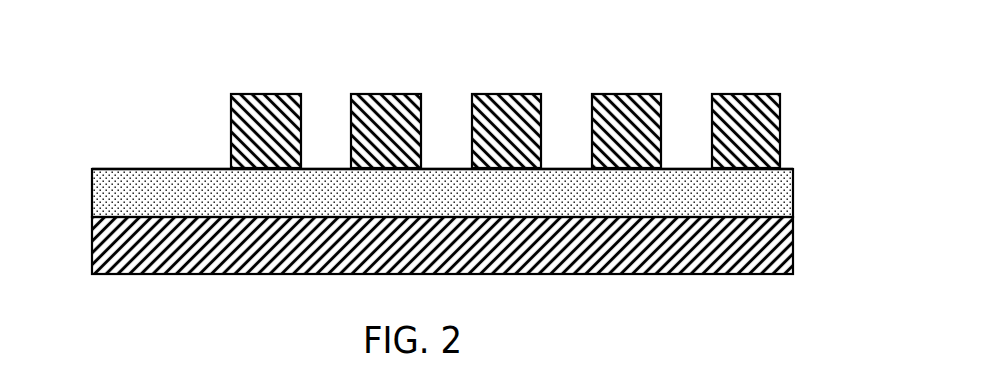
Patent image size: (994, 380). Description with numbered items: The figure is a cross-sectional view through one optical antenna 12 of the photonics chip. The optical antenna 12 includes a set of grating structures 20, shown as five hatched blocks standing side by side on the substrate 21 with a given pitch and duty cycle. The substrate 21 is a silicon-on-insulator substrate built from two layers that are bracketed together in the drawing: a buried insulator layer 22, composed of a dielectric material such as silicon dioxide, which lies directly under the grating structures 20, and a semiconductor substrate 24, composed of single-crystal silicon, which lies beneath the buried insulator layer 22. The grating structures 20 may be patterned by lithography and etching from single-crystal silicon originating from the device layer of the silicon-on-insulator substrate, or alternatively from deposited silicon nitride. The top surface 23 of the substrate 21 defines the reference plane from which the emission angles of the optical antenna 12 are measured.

The optical antenna 12 is at (166, 120).
The grating structures 20 is at (738, 124).
The substrate 21 is at (832, 168).
The buried insulator layer 22 is at (115, 196).
The top surface 23 is at (117, 168).
The semiconductor substrate 24 is at (115, 253).